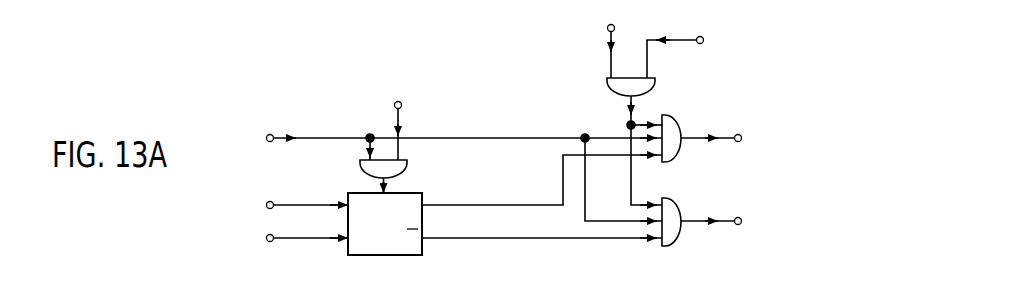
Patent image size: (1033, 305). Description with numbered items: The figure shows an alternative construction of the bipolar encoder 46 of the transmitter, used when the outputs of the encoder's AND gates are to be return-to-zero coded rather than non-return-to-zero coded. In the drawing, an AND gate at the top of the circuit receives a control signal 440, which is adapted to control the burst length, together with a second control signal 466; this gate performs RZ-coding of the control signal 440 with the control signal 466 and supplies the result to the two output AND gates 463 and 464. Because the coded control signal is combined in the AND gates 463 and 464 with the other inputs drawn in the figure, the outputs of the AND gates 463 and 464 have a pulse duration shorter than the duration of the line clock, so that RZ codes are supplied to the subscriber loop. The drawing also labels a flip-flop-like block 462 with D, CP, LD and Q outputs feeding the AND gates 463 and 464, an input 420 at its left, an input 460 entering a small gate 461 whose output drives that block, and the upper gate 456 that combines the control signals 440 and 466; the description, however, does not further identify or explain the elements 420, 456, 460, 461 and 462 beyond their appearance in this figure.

The bipolar encoder 46 is at (735, 40).
The input terminals 420 is at (292, 240).
The control signal 440 is at (606, 60).
The AND gate 456 is at (653, 85).
The clock input 460 is at (403, 107).
The AND gate 461 is at (407, 170).
The flip-flop 462 is at (416, 256).
The AND gate 463 is at (678, 119).
The AND gate 464 is at (676, 201).
The control signal 466 is at (676, 38).